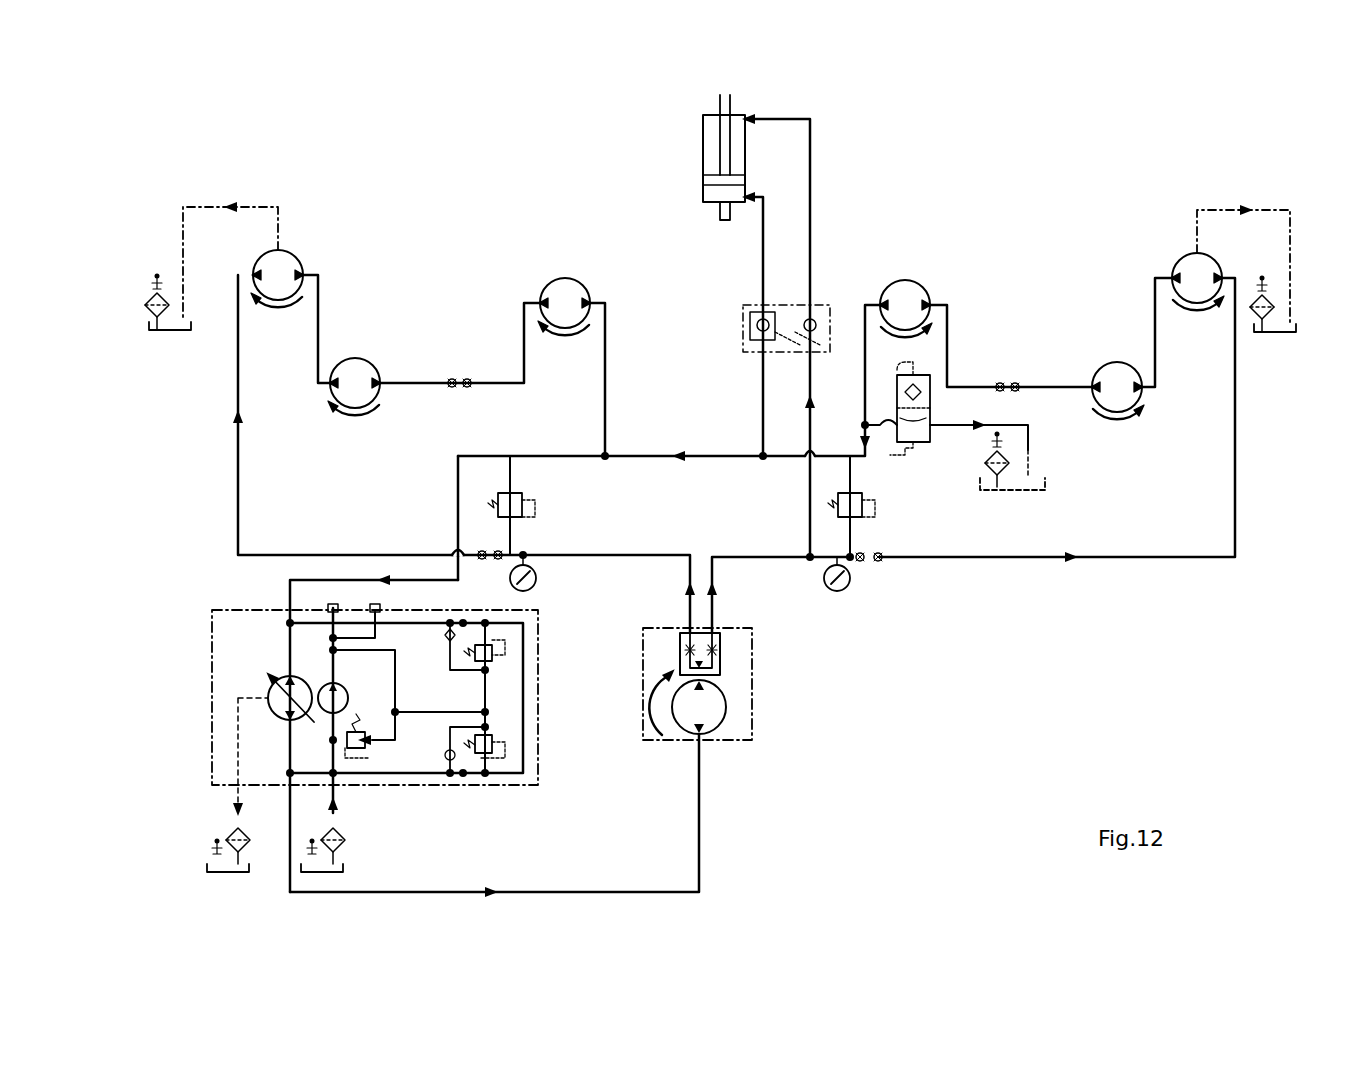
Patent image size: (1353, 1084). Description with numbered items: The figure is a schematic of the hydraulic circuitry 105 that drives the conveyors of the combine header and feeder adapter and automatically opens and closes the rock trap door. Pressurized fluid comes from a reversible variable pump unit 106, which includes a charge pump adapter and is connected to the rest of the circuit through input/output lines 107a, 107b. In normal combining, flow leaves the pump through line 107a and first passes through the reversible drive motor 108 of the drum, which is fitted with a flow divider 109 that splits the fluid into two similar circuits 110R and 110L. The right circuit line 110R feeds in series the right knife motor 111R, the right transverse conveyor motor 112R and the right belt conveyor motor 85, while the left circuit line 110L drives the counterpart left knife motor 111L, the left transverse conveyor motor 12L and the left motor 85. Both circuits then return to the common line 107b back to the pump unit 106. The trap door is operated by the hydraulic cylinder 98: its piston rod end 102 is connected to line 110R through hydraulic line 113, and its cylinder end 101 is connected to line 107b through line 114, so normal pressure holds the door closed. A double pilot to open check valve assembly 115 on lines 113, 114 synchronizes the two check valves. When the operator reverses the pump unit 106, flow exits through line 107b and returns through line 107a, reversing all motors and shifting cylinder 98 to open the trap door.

The left transverse conveyor motor 12L is at (372, 360).
The hydraulic drive motor 85 is at (580, 280).
The hydraulic motor 98 is at (698, 137).
The cylinder end 101 is at (718, 212).
The piston rod end 102 is at (733, 98).
The hydraulic circuitry 105 is at (200, 510).
The reversible variable pump unit 106 is at (487, 799).
The input/output line 107a is at (450, 895).
The input/output line 107b is at (290, 593).
The reversible drive motor 108 is at (782, 735).
The flow divider 109 is at (720, 660).
The left circuit line 110L is at (632, 557).
The right circuit line 110R is at (767, 558).
The left knife motor 111L is at (292, 252).
The right knife motor 111R is at (1170, 250).
The right transverse conveyor motor 112R is at (1110, 360).
The hydraulic line 113 is at (812, 433).
The hydraulic line 114 is at (762, 390).
The double pilot to open check valve assembly 115 is at (745, 333).